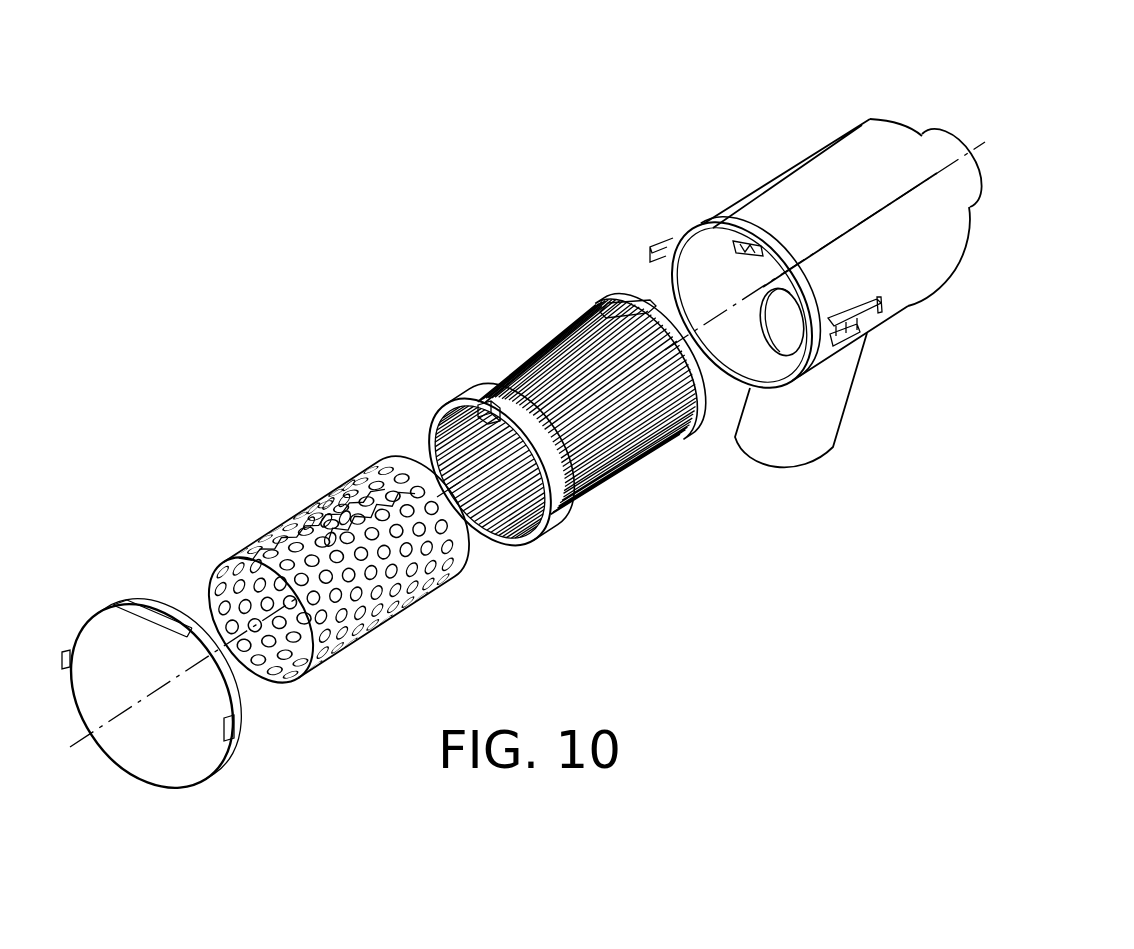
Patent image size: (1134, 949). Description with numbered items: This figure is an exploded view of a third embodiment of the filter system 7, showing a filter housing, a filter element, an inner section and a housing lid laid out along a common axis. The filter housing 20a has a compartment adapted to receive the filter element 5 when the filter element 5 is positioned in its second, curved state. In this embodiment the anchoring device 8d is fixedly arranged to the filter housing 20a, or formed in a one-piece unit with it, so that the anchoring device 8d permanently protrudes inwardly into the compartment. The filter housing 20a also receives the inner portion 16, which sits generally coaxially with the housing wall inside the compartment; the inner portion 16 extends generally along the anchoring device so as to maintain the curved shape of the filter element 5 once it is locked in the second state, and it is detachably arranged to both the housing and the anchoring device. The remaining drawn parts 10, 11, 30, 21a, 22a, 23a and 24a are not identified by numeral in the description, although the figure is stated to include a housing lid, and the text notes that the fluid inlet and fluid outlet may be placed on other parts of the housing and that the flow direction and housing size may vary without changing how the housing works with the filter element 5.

The filter element 5 is at (430, 255).
The filter system 7 is at (478, 140).
The anchoring device 8d is at (740, 252).
The filter cartridge 10 is at (574, 422).
The pleated filter media 11 is at (470, 375).
The inner portion 16 is at (350, 520).
The filter housing 20a is at (812, 254).
The end cap 21a is at (120, 652).
The side opening 22a is at (783, 340).
The outlet port 23a is at (951, 112).
The handle 24a is at (802, 435).
The end ring 30 is at (623, 307).